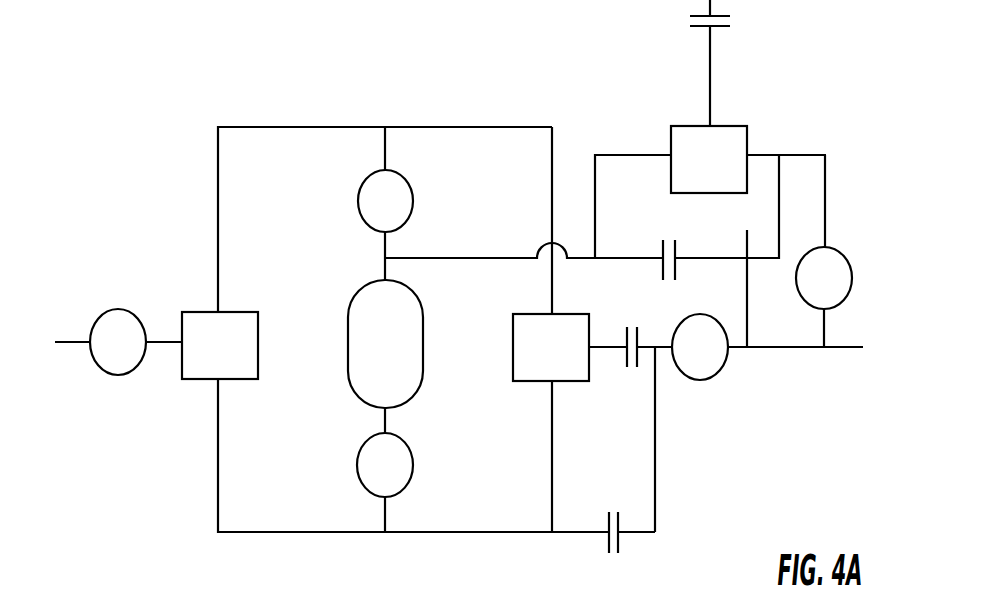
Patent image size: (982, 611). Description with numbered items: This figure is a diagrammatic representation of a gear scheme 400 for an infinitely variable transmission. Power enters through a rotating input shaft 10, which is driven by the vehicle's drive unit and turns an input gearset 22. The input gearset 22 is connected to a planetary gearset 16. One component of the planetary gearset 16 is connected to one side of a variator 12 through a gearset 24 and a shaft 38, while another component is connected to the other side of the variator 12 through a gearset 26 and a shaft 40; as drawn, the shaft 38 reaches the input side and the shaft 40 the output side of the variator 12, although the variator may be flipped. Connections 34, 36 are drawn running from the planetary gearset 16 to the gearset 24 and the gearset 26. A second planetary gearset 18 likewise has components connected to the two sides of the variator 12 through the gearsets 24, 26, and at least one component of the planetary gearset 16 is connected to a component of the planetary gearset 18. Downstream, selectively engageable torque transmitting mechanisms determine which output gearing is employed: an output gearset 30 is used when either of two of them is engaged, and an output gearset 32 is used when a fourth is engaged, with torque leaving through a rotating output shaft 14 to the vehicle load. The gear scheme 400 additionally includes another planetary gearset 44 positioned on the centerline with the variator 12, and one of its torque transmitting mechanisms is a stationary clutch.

The gear scheme 400 is at (141, 78).
The input shaft 10 is at (72, 342).
The variator 12 is at (373, 356).
The output shaft 14 is at (848, 347).
The planetary gearset 16 is at (207, 359).
The planetary gearset 18 is at (538, 361).
The input gearset 22 is at (105, 356).
The gearset 24 is at (372, 215).
The gearset 26 is at (372, 479).
The output gearset 30 is at (687, 361).
The output gearset 32 is at (811, 292).
The upper connection line 34 is at (310, 127).
The lower connection line 36 is at (287, 532).
The shaft 38 is at (415, 250).
The shaft 40 is at (387, 424).
The planetary gearset 44 is at (696, 172).